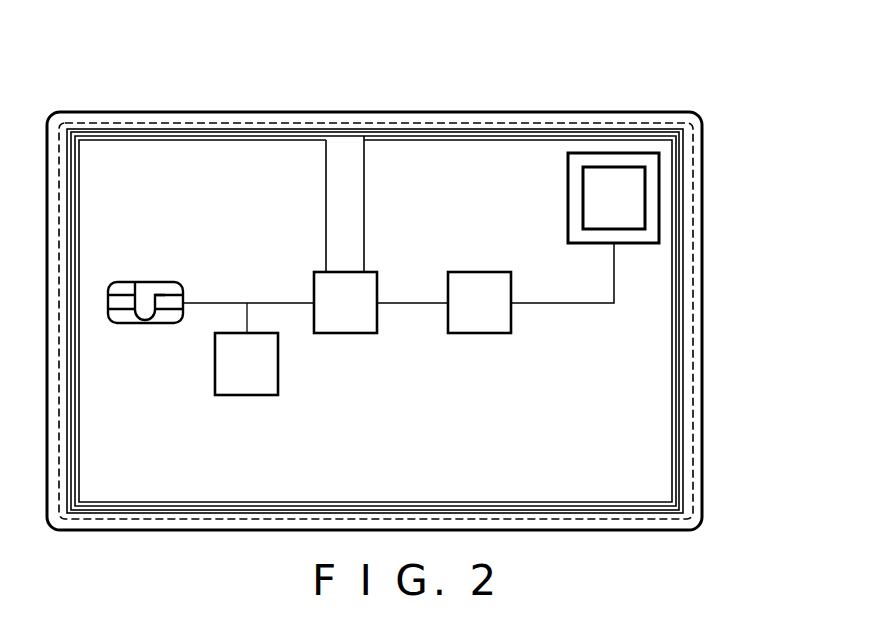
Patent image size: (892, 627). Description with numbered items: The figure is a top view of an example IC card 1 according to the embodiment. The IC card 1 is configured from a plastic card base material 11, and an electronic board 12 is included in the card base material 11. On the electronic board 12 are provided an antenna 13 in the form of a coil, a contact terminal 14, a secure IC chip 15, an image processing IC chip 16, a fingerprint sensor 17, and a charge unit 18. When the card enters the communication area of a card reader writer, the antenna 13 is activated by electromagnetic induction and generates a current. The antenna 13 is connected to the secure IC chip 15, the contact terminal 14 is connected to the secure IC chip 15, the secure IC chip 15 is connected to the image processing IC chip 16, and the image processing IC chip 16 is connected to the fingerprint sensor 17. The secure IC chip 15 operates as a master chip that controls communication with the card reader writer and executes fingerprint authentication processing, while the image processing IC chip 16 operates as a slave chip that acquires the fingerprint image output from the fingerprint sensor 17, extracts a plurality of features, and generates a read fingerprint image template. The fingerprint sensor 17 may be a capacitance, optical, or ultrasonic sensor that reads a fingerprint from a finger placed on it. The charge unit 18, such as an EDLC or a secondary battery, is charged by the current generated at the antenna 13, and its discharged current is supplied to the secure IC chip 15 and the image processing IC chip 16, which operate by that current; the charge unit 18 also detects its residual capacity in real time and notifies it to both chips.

The IC card 1 is at (683, 95).
The card base material 11 is at (703, 380).
The electronic board 12 is at (694, 243).
The antenna 13 is at (683, 305).
The contact terminal 14 is at (146, 325).
The secure IC chip 15 is at (343, 272).
The image processing IC chip 16 is at (480, 272).
The fingerprint sensor 17 is at (637, 200).
The charge unit 18 is at (247, 397).